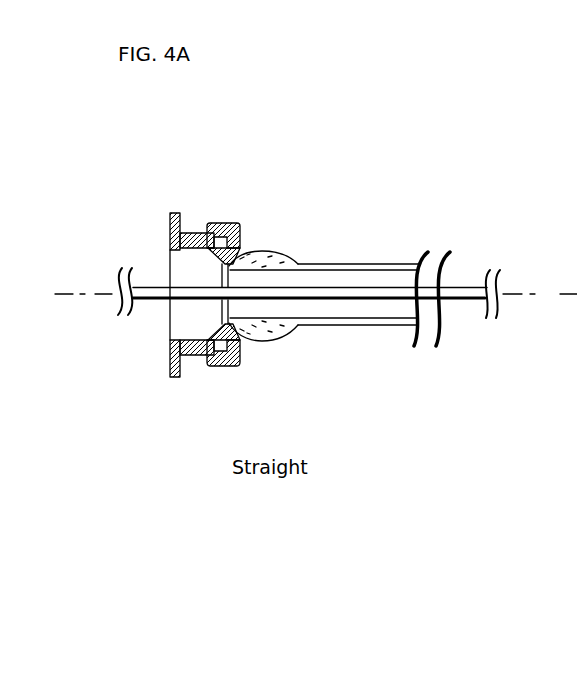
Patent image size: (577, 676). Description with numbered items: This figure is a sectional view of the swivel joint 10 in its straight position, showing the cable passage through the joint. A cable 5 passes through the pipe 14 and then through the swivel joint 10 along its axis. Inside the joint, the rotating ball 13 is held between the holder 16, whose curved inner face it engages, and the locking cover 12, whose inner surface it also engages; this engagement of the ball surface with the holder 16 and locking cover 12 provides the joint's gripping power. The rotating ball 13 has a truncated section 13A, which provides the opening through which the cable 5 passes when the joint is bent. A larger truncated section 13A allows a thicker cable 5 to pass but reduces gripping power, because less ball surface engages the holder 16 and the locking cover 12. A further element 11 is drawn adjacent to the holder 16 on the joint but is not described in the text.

The swivel joint 10 is at (425, 203).
The cable 5 is at (155, 287).
The holder 16 is at (176, 212).
The nut 11 is at (229, 222).
The locking cover 12 is at (285, 252).
The rotating ball 13 is at (257, 329).
The truncated section 13A is at (225, 304).
The pipe 14 is at (358, 263).